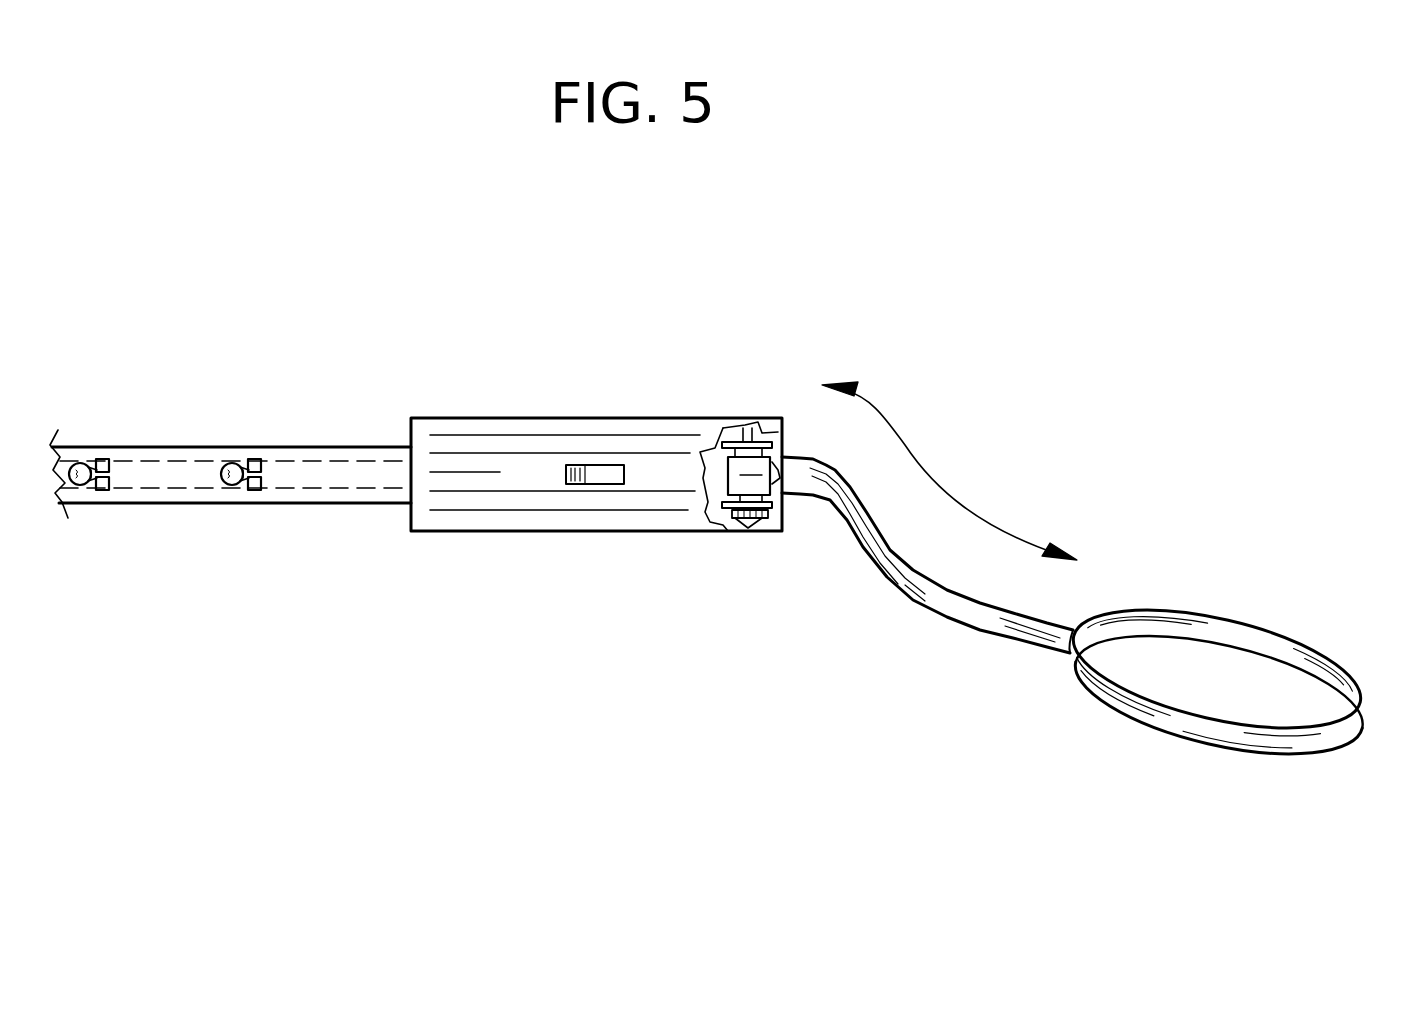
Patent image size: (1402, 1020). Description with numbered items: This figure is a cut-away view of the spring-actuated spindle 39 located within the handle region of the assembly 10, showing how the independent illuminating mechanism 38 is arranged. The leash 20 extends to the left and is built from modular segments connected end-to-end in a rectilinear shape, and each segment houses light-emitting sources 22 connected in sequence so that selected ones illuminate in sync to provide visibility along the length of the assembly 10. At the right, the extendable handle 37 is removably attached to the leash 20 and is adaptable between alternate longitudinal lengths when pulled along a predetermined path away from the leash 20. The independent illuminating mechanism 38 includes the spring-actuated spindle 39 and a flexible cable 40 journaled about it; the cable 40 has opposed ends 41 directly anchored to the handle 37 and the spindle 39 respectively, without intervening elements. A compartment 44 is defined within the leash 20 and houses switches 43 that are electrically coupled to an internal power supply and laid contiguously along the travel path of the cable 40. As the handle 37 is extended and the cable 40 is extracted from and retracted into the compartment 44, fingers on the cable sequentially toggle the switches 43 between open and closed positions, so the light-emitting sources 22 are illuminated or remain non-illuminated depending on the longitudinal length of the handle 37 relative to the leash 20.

The assembly 10 is at (954, 220).
The leash 20 is at (310, 455).
The light-emitting sources 22 is at (232, 462).
The extendable handle 37 is at (1218, 612).
The independent illuminating mechanism 38 is at (790, 506).
The spring-actuated spindle 39 is at (733, 525).
The flexible cable 40 is at (905, 577).
The opposed ends 41 is at (1058, 636).
The switches 43 is at (604, 480).
The compartment 44 is at (648, 532).